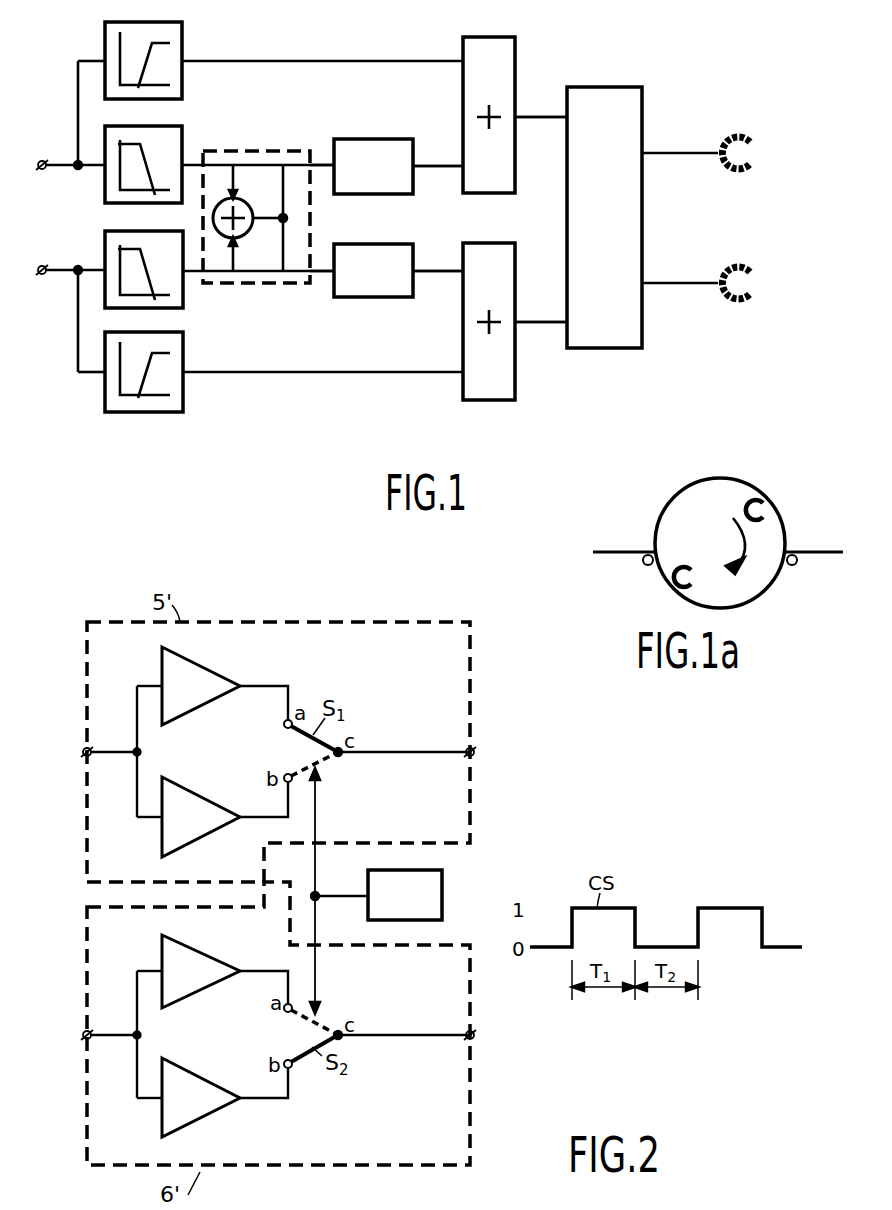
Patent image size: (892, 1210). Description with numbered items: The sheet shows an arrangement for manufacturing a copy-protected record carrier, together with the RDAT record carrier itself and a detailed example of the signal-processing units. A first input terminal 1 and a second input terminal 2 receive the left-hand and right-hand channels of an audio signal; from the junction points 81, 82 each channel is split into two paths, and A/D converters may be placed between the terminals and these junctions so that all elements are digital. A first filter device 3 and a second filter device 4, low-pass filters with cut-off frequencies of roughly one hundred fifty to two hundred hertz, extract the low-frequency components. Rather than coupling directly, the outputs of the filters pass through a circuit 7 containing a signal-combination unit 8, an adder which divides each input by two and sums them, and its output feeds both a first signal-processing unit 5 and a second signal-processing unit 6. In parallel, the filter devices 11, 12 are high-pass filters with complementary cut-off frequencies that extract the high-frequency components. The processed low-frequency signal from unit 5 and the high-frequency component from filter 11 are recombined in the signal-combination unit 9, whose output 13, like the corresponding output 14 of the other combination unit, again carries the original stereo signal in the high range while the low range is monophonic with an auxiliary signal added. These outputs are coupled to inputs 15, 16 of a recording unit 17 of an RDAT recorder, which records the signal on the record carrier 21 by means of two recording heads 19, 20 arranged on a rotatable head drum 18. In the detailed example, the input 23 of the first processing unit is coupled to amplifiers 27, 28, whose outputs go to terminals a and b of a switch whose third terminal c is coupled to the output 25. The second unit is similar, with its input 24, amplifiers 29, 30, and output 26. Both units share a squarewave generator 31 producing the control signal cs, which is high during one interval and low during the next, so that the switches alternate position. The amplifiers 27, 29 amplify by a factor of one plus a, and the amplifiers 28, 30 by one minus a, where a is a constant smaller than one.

In FIG. 1, the first input terminal 1 is at (42, 160).
In FIG. 1, the second input terminal 2 is at (42, 275).
In FIG. 1, the first filter device 3 is at (182, 137).
In FIG. 1, the second filter device 4 is at (183, 295).
In FIG. 1, the first signal-processing unit 5 is at (374, 139).
In FIG. 1, the second signal-processing unit 6 is at (376, 300).
In FIG. 1, the circuit 7 is at (262, 150).
In FIG. 1, the signal-combination unit 8 is at (245, 207).
In FIG. 1, the signal-combination unit 9 is at (515, 48).
In FIG. 1, the filter device 11 is at (182, 40).
In FIG. 1, the filter device 12 is at (183, 395).
In FIG. 1, the output 13 is at (516, 118).
In FIG. 1, the output 14 is at (516, 324).
In FIG. 1, the input 15 is at (560, 113).
In FIG. 1, the input 16 is at (562, 320).
In FIG. 1, the recording unit 17 is at (610, 86).
In FIG. 1a, the rotatable head drum 18 is at (660, 515).
In FIG. 1, the recording head 19 is at (745, 133).
In FIG. 1a, the recording head 19 is at (745, 508).
In FIG. 1, the recording head 20 is at (750, 305).
In FIG. 1a, the recording head 20 is at (682, 566).
In FIG. 1a, the record carrier 21 is at (830, 556).
In FIG. 1, the input 23 is at (334, 162).
In FIG. 2, the input 23 is at (82, 752).
In FIG. 1, the input 24 is at (332, 290).
In FIG. 2, the input 24 is at (82, 1035).
In FIG. 1, the output 25 is at (416, 163).
In FIG. 2, the output 25 is at (475, 752).
In FIG. 1, the output 26 is at (416, 280).
In FIG. 2, the output 26 is at (475, 1035).
In FIG. 2, the amplifier 27 is at (200, 665).
In FIG. 2, the amplifier 28 is at (200, 795).
In FIG. 2, the amplifier 29 is at (200, 954).
In FIG. 2, the amplifier 30 is at (200, 1077).
In FIG. 2, the squarewave generator 31 is at (368, 918).
In FIG. 1, the junction point 81 is at (78, 170).
In FIG. 1, the junction point 82 is at (78, 266).